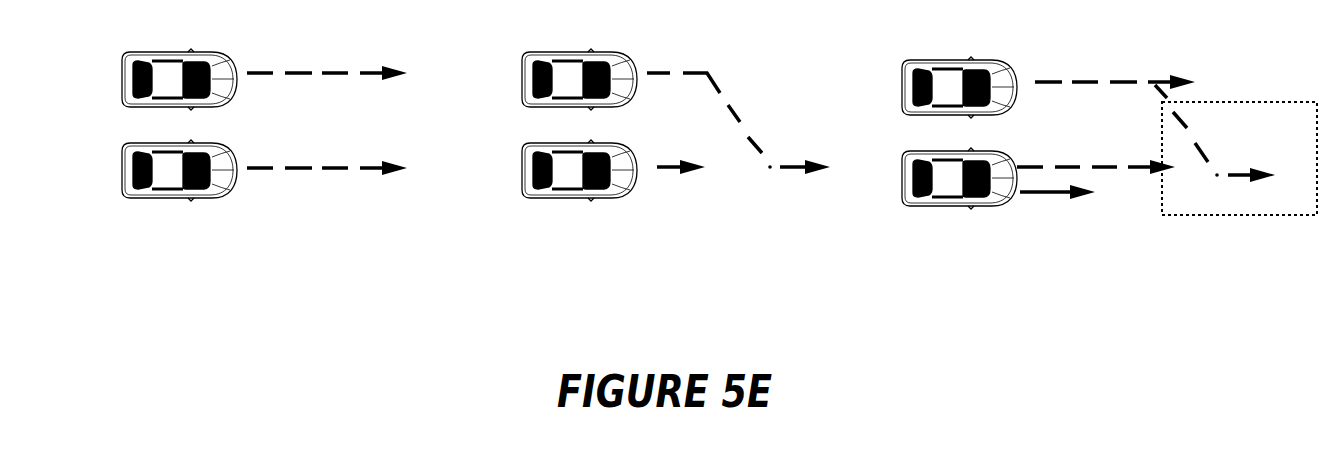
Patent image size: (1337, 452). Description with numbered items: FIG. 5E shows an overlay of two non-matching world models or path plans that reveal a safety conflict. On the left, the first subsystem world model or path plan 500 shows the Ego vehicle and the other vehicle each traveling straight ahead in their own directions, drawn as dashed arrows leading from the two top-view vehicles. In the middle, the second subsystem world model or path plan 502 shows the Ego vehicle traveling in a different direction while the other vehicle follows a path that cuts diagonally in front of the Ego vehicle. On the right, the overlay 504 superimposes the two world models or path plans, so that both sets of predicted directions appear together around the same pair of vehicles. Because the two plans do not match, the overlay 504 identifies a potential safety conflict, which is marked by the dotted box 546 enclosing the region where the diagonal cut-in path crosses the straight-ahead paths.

The subsystem "1" world model or path plan 500 is at (234, 172).
The subsystem "2" world model or path plan 502 is at (646, 179).
The overlay 504 is at (1081, 169).
The dotted box 546 is at (1230, 102).